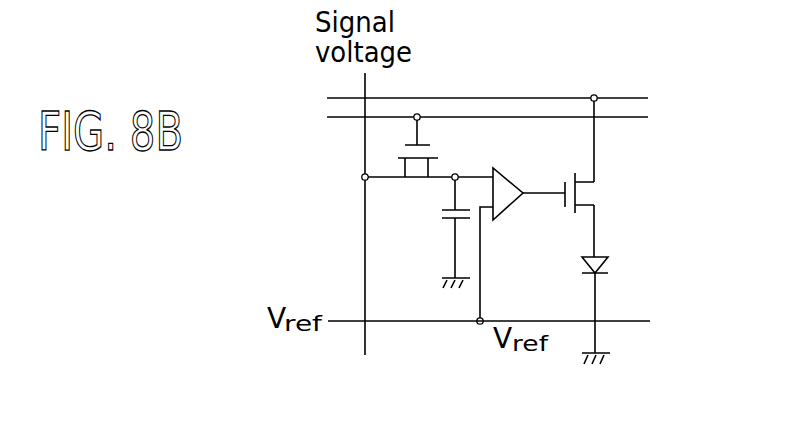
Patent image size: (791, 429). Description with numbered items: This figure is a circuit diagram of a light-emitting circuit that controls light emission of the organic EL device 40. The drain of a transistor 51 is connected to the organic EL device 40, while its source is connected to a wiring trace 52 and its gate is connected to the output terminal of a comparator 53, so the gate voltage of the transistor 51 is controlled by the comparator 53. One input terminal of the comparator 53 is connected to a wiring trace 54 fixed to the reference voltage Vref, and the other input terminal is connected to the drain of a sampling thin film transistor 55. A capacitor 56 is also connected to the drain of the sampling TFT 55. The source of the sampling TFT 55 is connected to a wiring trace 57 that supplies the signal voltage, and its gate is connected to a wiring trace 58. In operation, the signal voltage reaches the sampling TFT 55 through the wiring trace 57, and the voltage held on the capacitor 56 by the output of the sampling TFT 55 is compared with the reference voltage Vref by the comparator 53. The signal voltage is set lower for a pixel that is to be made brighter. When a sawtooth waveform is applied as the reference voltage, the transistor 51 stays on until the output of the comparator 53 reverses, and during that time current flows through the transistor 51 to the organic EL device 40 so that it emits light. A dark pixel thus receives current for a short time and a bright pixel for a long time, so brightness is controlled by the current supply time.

The wiring trace 57 is at (366, 82).
The wiring trace 52 is at (620, 99).
The wiring trace 58 is at (620, 117).
The sampling thin film transistor 55 is at (440, 150).
The capacitor 56 is at (433, 212).
The comparator 53 is at (513, 205).
The transistor 51 is at (583, 190).
The organic EL device 40 is at (612, 268).
The wiring trace 54 is at (620, 322).